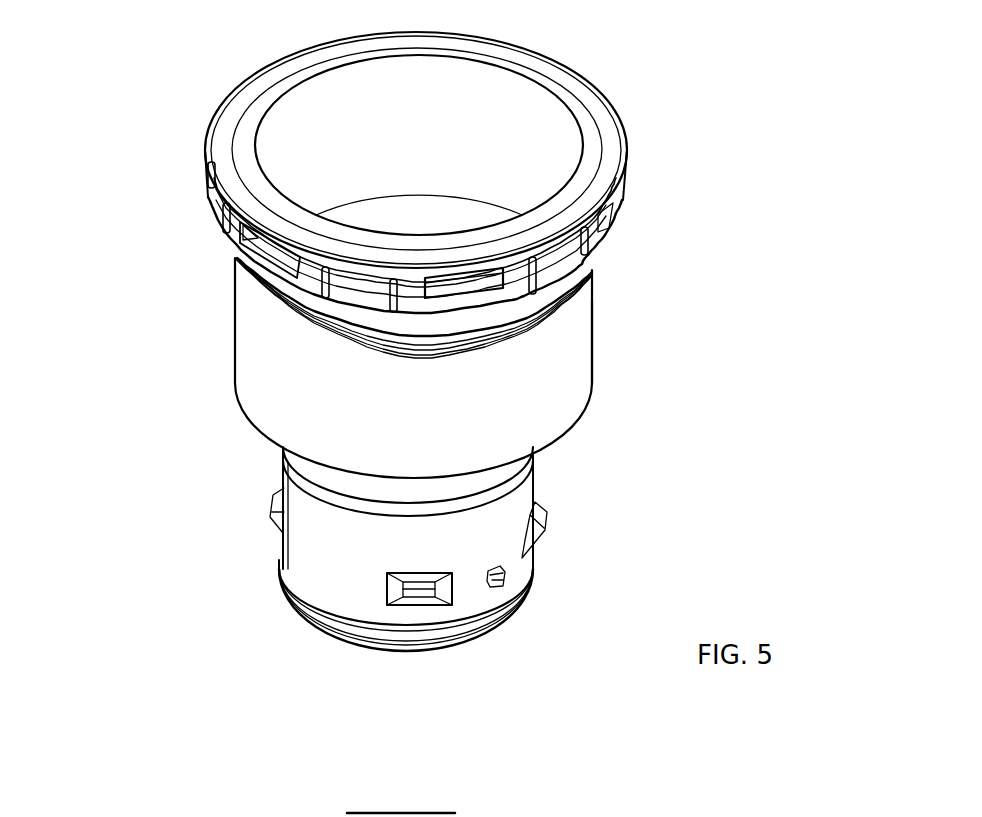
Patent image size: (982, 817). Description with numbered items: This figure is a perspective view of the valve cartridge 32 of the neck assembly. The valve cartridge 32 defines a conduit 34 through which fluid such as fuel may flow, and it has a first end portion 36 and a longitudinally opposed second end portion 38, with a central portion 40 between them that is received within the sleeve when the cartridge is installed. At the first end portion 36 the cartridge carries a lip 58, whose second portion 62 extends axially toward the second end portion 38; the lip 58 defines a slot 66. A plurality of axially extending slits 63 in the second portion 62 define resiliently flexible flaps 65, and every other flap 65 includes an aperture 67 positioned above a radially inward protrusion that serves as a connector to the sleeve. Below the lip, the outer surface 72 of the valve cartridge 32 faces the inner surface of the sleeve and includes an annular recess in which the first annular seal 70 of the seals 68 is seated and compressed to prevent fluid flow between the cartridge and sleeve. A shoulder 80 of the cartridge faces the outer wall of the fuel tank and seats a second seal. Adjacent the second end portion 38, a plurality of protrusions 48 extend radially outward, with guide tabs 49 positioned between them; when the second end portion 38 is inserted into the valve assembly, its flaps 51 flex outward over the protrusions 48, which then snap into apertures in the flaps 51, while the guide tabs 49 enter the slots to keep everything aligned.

The valve cartridge 32 is at (757, 342).
The conduit 34 is at (363, 148).
The first end portion 36 is at (642, 167).
The second end portion 38 is at (293, 620).
The central portion 40 is at (288, 427).
The protrusions 48 is at (417, 603).
The guide tabs 49 is at (527, 575).
The flaps 51 is at (511, 810).
The lip 58 is at (213, 184).
The second portion of the lip 62 is at (590, 278).
The axially extending slits 63 is at (575, 228).
The flaps 65 is at (510, 293).
The slot 66 is at (230, 248).
The aperture 67 is at (442, 285).
The seals 68 is at (290, 331).
The first annular seal 70 is at (290, 331).
The outer surface 72 is at (558, 401).
The shoulder 80 is at (553, 436).